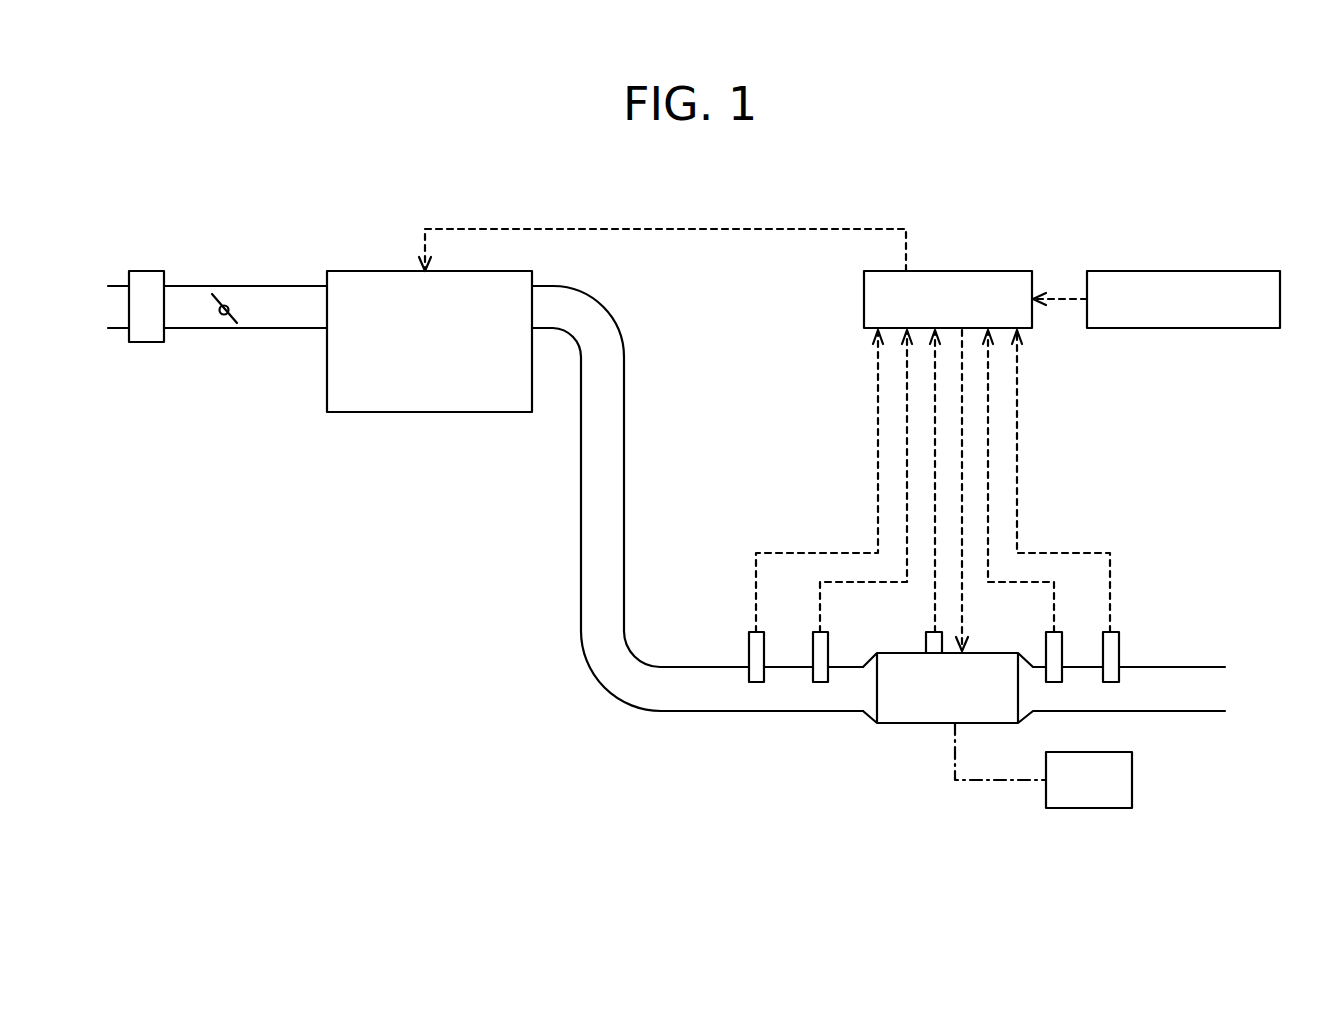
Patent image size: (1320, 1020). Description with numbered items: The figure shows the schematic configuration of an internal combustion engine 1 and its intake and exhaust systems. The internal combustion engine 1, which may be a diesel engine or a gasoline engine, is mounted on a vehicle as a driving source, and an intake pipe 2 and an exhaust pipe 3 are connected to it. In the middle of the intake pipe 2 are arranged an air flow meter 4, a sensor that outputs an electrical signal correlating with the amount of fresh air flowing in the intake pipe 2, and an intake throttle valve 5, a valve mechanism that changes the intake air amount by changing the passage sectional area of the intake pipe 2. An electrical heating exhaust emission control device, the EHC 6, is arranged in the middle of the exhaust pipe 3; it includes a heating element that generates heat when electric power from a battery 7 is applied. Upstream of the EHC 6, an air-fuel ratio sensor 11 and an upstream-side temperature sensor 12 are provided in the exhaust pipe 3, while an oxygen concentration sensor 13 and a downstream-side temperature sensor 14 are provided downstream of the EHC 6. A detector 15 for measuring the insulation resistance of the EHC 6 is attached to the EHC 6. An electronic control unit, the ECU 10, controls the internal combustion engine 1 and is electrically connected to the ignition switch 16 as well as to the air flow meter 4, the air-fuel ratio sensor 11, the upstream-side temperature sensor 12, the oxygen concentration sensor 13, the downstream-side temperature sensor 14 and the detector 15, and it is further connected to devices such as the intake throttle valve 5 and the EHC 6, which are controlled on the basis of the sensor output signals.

The internal combustion engine 1 is at (428, 412).
The intake pipe 2 is at (284, 330).
The exhaust pipe 3 is at (625, 467).
The air flow meter 4 is at (149, 342).
The intake throttle valve 5 is at (218, 313).
The electrical heating exhaust emission control device (EHC) 6 is at (907, 725).
The battery 7 is at (1132, 780).
The electronic control unit (ECU) 10 is at (957, 271).
The air-fuel ratio sensor 11 is at (748, 645).
The upstream-side temperature sensor 12 is at (812, 645).
The oxygen concentration sensor 13 is at (1063, 645).
The downstream-side temperature sensor 14 is at (1120, 645).
The detector 15 is at (926, 633).
The ignition switch 16 is at (1225, 271).